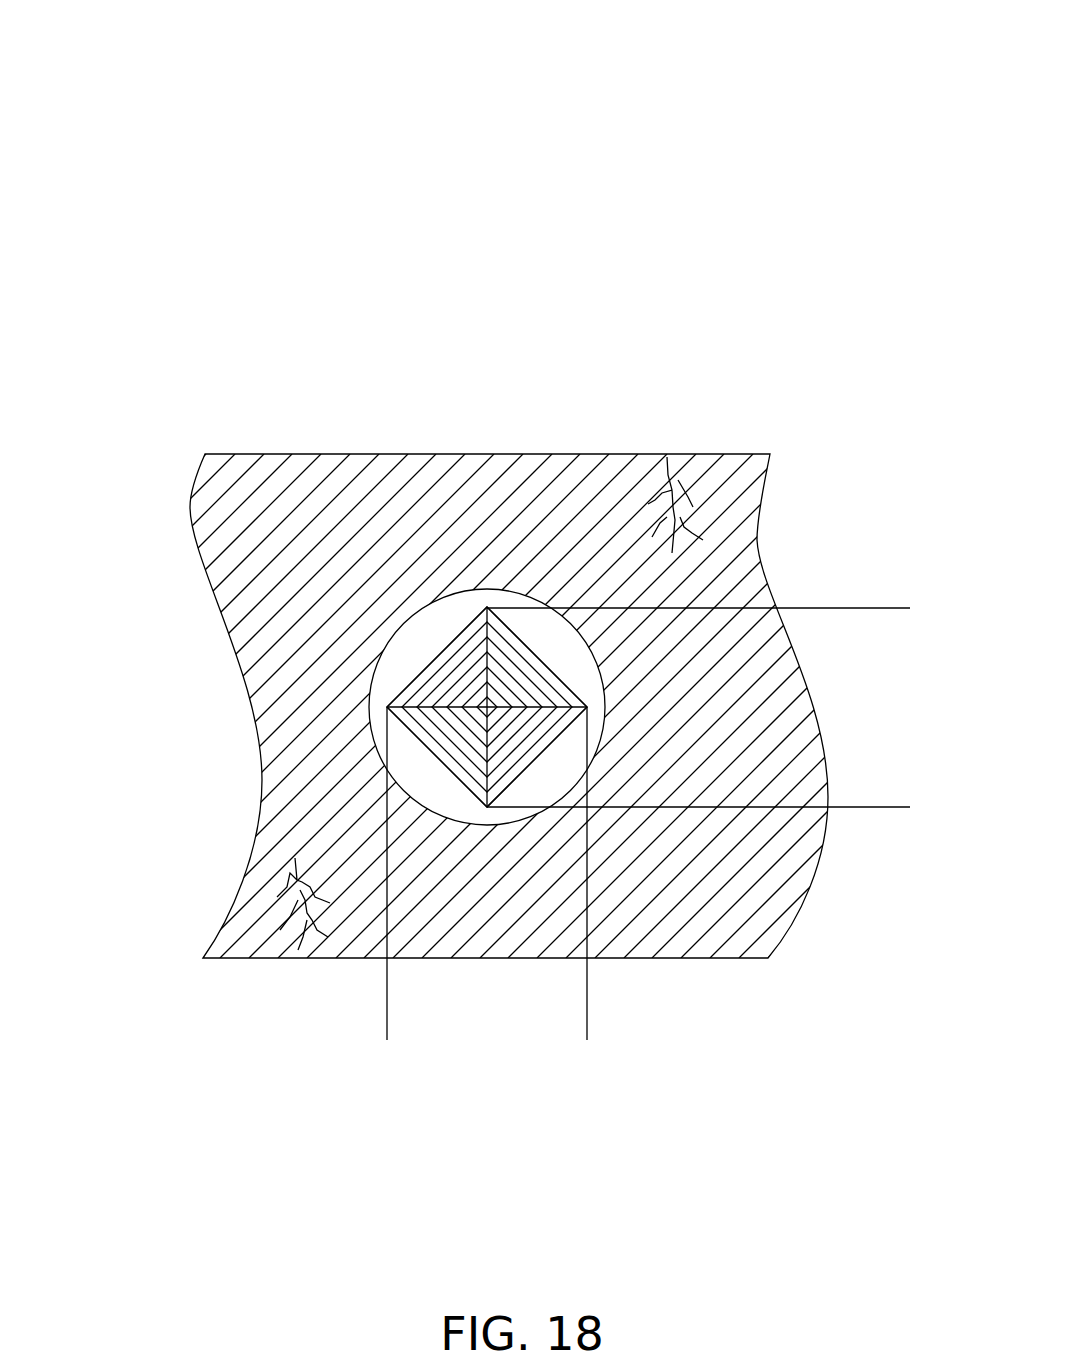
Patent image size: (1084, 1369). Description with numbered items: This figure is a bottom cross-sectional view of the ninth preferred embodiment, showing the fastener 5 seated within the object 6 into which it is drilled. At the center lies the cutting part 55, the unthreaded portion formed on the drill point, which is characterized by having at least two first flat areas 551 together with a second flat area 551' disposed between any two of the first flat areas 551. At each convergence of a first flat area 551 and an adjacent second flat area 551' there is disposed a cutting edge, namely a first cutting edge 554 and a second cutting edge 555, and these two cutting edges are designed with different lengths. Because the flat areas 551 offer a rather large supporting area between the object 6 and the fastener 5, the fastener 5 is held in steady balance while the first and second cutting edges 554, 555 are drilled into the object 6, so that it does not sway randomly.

The fastener 5 is at (213, 136).
The object 6 is at (398, 455).
The cutting part 55 is at (443, 630).
The first flat area 551 is at (504, 645).
The second flat area 551' is at (508, 776).
The first cutting edge 554 is at (587, 1028).
The second cutting edge 555 is at (900, 608).